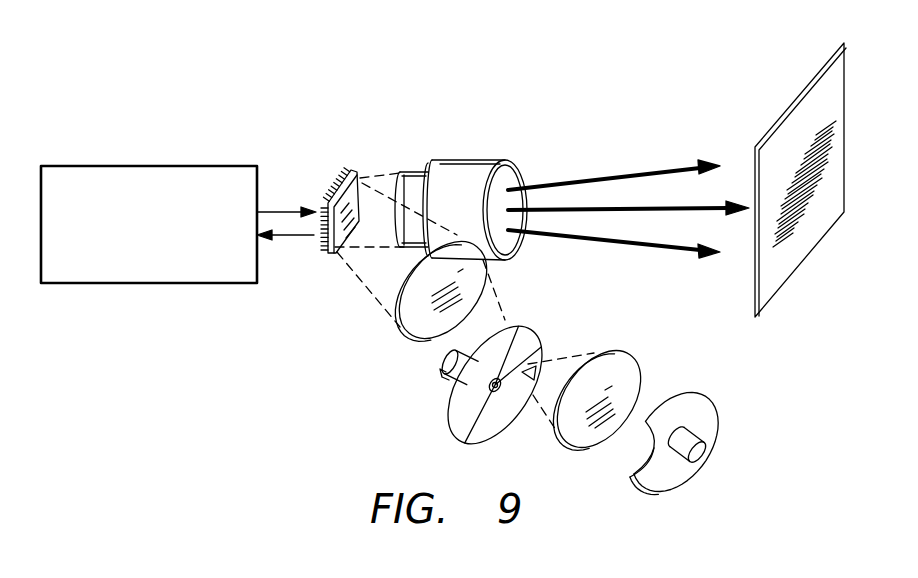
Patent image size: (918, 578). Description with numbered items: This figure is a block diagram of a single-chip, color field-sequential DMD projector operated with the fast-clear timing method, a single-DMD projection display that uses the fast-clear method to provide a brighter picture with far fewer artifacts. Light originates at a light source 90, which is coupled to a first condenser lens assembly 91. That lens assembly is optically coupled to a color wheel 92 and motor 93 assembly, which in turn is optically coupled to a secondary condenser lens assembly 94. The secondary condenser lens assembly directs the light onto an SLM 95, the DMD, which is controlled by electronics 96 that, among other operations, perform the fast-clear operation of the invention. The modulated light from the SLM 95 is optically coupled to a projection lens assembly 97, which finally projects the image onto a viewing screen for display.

The light source 90 is at (708, 415).
The first condenser lens assembly 91 is at (633, 368).
The color wheel 92 is at (492, 432).
The motor 93 is at (447, 384).
The secondary condenser lens assembly 94 is at (408, 333).
The SLM 95 is at (357, 172).
The electronics 96 is at (147, 166).
The projection lens assembly 97 is at (478, 158).